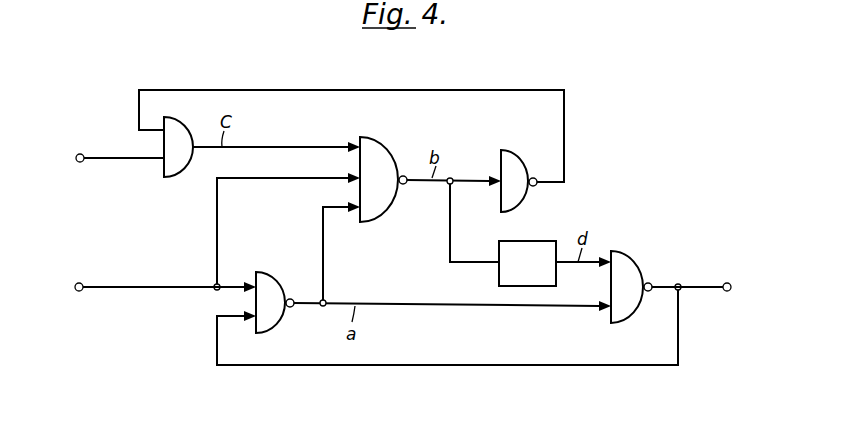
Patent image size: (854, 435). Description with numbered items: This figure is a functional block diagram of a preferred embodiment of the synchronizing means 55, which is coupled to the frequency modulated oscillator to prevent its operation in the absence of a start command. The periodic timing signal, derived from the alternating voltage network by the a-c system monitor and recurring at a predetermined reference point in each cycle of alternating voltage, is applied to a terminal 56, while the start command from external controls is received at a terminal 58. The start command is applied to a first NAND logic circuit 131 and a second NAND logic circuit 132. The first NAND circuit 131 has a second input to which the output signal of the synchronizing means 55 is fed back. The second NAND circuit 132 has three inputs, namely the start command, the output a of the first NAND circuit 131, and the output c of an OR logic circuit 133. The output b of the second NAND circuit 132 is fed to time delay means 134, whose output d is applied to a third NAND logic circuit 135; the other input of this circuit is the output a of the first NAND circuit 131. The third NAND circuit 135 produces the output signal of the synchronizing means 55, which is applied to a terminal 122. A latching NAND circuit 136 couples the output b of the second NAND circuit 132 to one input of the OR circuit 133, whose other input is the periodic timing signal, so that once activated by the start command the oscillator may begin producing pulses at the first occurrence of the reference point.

The synchronizing means 55 is at (404, 264).
The terminal 56 is at (83, 154).
The terminal 58 is at (82, 291).
The terminal 122 is at (724, 292).
The first NAND logic circuit 131 is at (275, 270).
The second NAND logic circuit 132 is at (385, 140).
The OR logic circuit 133 is at (178, 177).
The time delay means 134 is at (537, 241).
The third NAND logic circuit 135 is at (637, 262).
The latching NAND circuit 136 is at (521, 152).